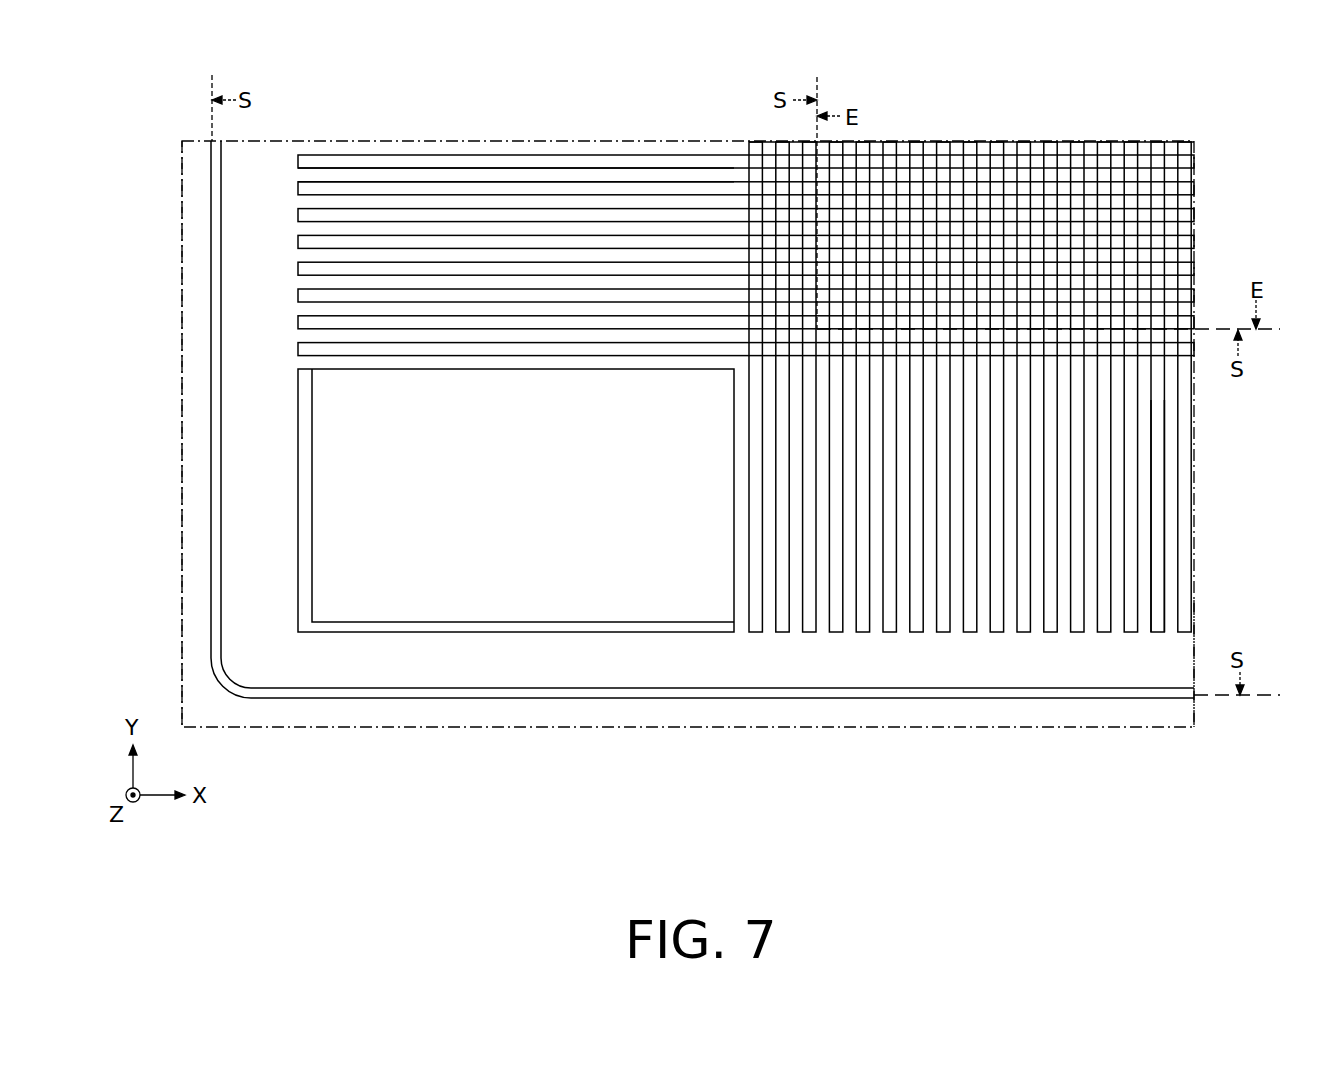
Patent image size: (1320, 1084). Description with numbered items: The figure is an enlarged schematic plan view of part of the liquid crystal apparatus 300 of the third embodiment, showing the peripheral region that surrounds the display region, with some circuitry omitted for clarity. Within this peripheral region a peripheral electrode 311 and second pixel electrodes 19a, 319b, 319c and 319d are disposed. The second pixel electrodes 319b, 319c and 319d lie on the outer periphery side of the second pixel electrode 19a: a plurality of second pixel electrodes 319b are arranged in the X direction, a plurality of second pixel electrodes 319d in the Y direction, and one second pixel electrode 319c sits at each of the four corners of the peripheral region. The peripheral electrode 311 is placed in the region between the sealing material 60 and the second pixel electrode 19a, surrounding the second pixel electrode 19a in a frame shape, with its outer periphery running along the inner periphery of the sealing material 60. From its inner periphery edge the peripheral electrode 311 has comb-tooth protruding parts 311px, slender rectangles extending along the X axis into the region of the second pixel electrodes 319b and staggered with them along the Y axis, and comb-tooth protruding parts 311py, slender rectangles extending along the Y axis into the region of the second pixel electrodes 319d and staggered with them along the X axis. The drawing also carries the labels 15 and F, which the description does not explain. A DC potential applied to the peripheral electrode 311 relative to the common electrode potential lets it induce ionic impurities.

The liquid crystal apparatus 300 is at (1226, 66).
The peripheral electrode 311 is at (688, 663).
The protruding parts 311px is at (432, 175).
The protruding parts 311py is at (1150, 578).
The second pixel electrode 319b is at (557, 188).
The second pixel electrode 319c is at (512, 570).
The second pixel electrode 319d is at (1160, 525).
The second pixel electrode 19a is at (770, 152).
The mesh pattern 15 is at (1082, 148).
The sealing material 60 is at (805, 712).
The folding axis F is at (997, 728).